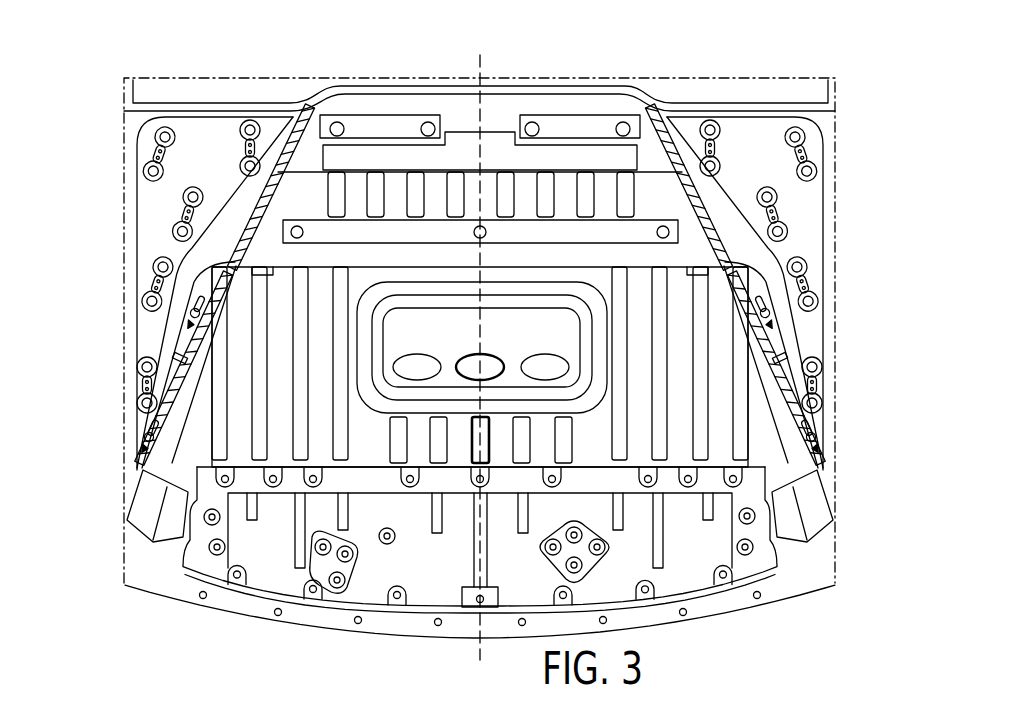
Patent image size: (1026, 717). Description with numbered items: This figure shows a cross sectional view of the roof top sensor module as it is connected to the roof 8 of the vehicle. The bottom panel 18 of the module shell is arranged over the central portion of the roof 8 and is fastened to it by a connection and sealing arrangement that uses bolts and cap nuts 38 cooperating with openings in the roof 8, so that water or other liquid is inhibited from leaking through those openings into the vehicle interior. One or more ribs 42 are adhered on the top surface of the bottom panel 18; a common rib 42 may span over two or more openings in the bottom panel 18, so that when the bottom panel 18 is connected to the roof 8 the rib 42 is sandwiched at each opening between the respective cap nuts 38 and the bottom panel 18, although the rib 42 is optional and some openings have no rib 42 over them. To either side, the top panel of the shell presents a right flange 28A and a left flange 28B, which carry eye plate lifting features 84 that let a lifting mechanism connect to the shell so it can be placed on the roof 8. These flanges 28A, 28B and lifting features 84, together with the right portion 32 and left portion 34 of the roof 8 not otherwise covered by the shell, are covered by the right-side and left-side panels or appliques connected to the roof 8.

The roof 8 is at (217, 138).
The bottom panel 18 is at (660, 152).
The right flange 28A is at (785, 383).
The left flange 28B is at (185, 343).
The right portion of the roof 32 is at (802, 217).
The left portion of the roof 34 is at (152, 220).
The cap nut 38 is at (337, 122).
The rib 42 is at (385, 127).
The lifting feature 84 is at (182, 311).